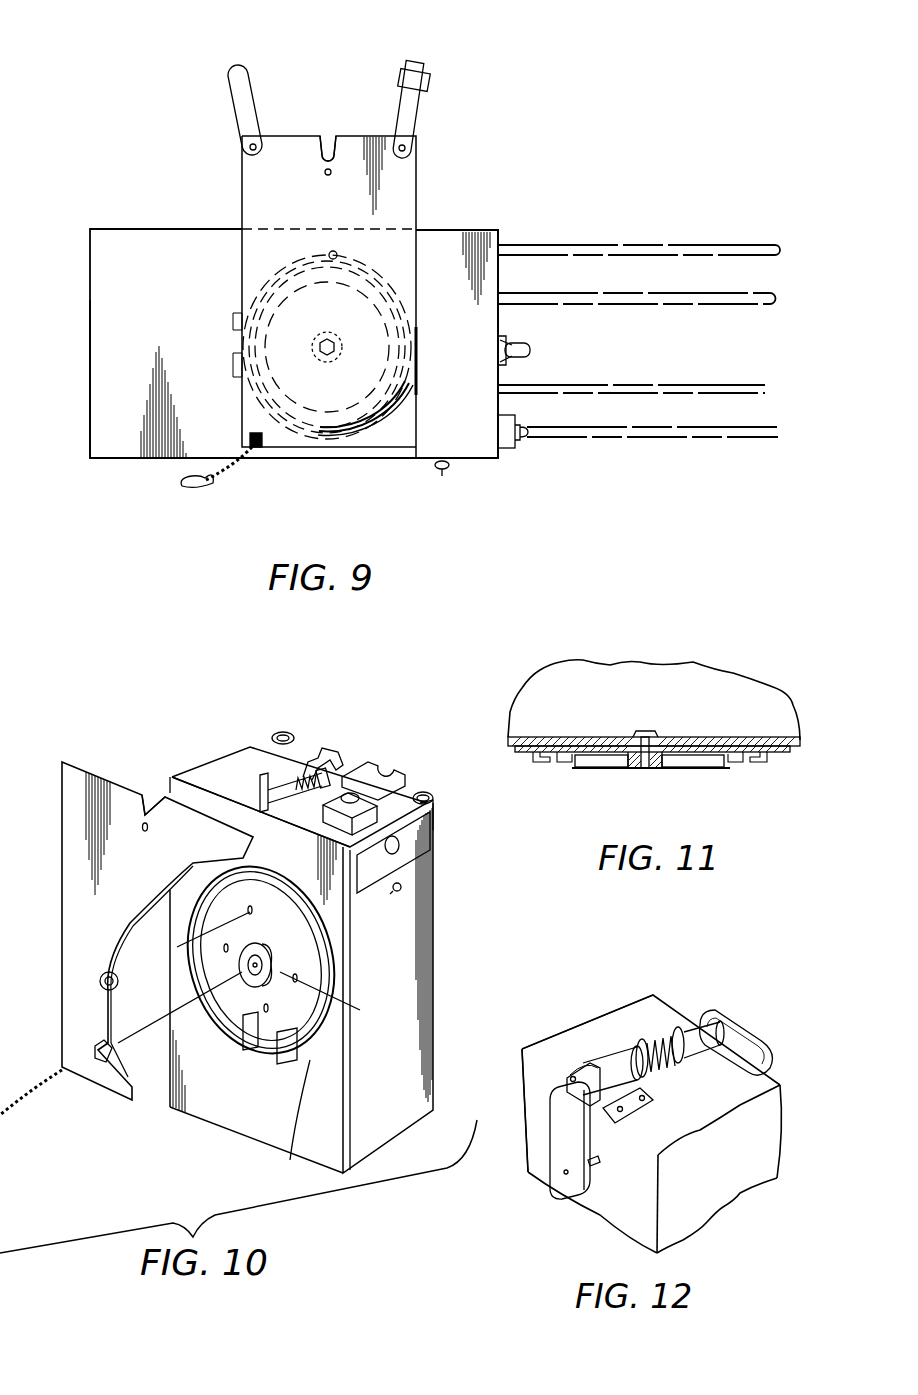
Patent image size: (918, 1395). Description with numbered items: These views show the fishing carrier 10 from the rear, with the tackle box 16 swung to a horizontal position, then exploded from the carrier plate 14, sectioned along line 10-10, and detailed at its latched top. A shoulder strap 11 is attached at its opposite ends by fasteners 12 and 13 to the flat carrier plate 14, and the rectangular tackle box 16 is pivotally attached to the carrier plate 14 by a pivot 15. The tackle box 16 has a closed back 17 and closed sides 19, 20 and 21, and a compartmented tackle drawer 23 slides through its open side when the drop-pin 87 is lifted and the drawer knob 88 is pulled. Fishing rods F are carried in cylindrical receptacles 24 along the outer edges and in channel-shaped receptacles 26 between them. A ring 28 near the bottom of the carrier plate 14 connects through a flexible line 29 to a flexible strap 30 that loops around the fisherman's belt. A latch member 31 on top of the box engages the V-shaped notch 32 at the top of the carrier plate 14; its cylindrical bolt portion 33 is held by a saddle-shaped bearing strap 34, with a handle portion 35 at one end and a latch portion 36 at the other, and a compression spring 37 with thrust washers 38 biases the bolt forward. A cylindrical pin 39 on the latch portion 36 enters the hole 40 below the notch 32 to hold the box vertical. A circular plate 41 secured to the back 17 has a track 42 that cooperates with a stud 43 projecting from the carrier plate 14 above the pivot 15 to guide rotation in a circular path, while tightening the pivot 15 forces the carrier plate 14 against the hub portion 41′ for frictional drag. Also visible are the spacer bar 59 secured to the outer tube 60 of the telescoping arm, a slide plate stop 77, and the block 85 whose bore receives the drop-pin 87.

In FIG. 10, the carrier 10 is at (157, 903).
In FIG. 9, the shoulder strap 11 is at (256, 88).
In FIG. 9, the fastener 12 is at (248, 140).
In FIG. 9, the fastener 13 is at (410, 147).
In FIG. 9, the carrier plate 14 is at (395, 190).
In FIG. 10, the carrier plate 14 is at (75, 885).
In FIG. 9, the pivot 15 is at (327, 355).
In FIG. 10, the pivot 15 is at (102, 1060).
In FIG. 11, the pivot 15 is at (633, 737).
In FIG. 9, the tackle box 16 is at (150, 212).
In FIG. 10, the tackle box 16 is at (226, 745).
In FIG. 11, the tackle box 16 is at (722, 658).
In FIG. 12, the tackle box 16 is at (722, 1220).
In FIG. 9, the back 17 is at (166, 311).
In FIG. 10, the back 17 is at (227, 1097).
In FIG. 11, the back 17 is at (718, 738).
In FIG. 12, the back 17 is at (530, 1082).
In FIG. 9, the side 19 is at (90, 348).
In FIG. 9, the side 20 is at (473, 230).
In FIG. 9, the side 21 is at (500, 275).
In FIG. 10, the side 21 is at (203, 770).
In FIG. 12, the side 21 is at (535, 1047).
In FIG. 10, the tackle drawer 23 is at (403, 915).
In FIG. 10, the cylindrical receptacles 24 is at (424, 792).
In FIG. 10, the channel-shaped receptacles 26 is at (384, 772).
In FIG. 9, the ring 28 is at (253, 433).
In FIG. 9, the flexible line 29 is at (250, 455).
In FIG. 9, the flexible strap 30 is at (192, 488).
In FIG. 12, the latch member 31 is at (728, 1010).
In FIG. 9, the V-shaped notch 32 is at (332, 136).
In FIG. 10, the V-shaped notch 32 is at (150, 798).
In FIG. 12, the cylindrical bolt portion 33 is at (580, 1074).
In FIG. 9, the saddle-shaped bearing strap 34 is at (520, 352).
In FIG. 12, the saddle-shaped bearing strap 34 is at (612, 1060).
In FIG. 10, the handle portion 35 is at (320, 752).
In FIG. 12, the handle portion 35 is at (748, 1045).
In FIG. 9, the latch portion 36 is at (530, 348).
In FIG. 10, the latch portion 36 is at (263, 772).
In FIG. 12, the latch portion 36 is at (560, 1160).
In FIG. 12, the compression spring 37 is at (665, 1082).
In FIG. 12, the thrust washers 38 is at (676, 1030).
In FIG. 10, the cylindrical pin 39 is at (302, 758).
In FIG. 12, the cylindrical pin 39 is at (596, 1166).
In FIG. 9, the hole 40 is at (322, 172).
In FIG. 10, the hole 40 is at (143, 820).
In FIG. 9, the circular plate 41 is at (418, 332).
In FIG. 10, the circular plate 41 is at (322, 977).
In FIG. 11, the circular plate 41 is at (757, 762).
In FIG. 11, the hub portion 41′ is at (630, 768).
In FIG. 9, the track 42 is at (365, 428).
In FIG. 10, the track 42 is at (307, 1100).
In FIG. 11, the track 42 is at (730, 768).
In FIG. 9, the stud 43 is at (337, 254).
In FIG. 10, the stud 43 is at (116, 984).
In FIG. 10, the spacer bar 59 is at (378, 812).
In FIG. 10, the outer tube 60 is at (428, 797).
In FIG. 9, the slide plate stop 77 is at (470, 460).
In FIG. 10, the slide plate stop 77 is at (413, 857).
In FIG. 9, the block 85 is at (512, 448).
In FIG. 9, the drop-pin 87 is at (527, 437).
In FIG. 9, the drawer knob 88 is at (445, 474).
In FIG. 10, the drawer knob 88 is at (401, 886).
In FIG. 9, the fishing rods F is at (662, 430).